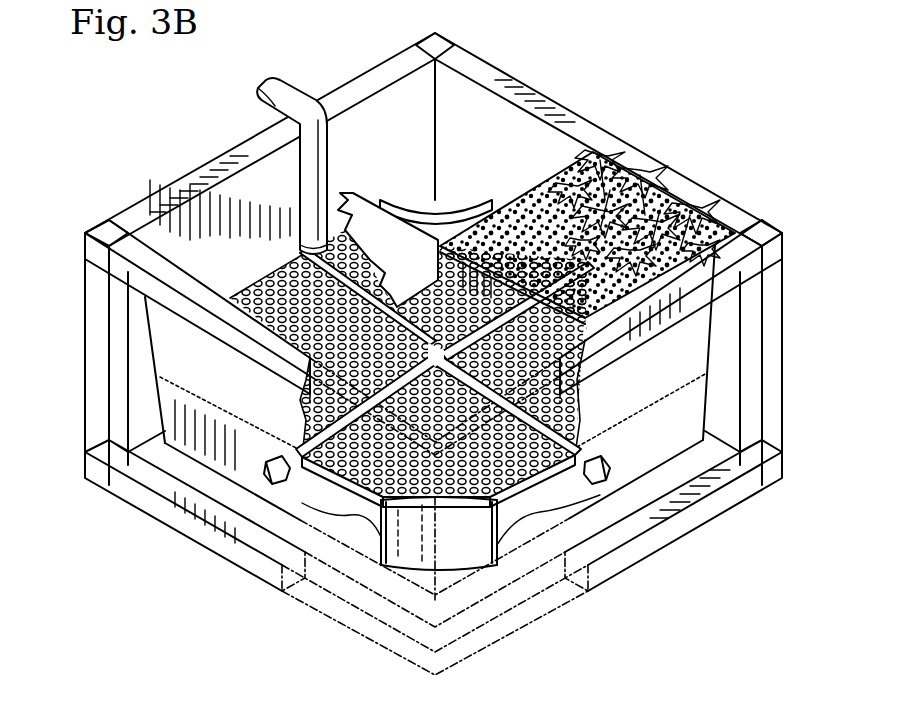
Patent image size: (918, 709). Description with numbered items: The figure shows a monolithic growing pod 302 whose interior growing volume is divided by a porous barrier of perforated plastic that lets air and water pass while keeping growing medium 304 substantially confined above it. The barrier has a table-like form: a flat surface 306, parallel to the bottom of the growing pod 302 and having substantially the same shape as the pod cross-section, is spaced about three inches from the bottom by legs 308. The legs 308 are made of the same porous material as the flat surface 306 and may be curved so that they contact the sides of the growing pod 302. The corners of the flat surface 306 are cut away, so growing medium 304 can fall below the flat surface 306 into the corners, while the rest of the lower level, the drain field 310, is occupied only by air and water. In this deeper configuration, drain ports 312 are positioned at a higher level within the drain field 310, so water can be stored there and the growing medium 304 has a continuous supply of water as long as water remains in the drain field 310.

The monolithic growing pod 302 is at (598, 148).
The growing medium 304 is at (493, 222).
The flat surface 306 is at (572, 448).
The legs 308 is at (410, 547).
The drain field 310 is at (212, 450).
The drain ports 312 is at (290, 485).